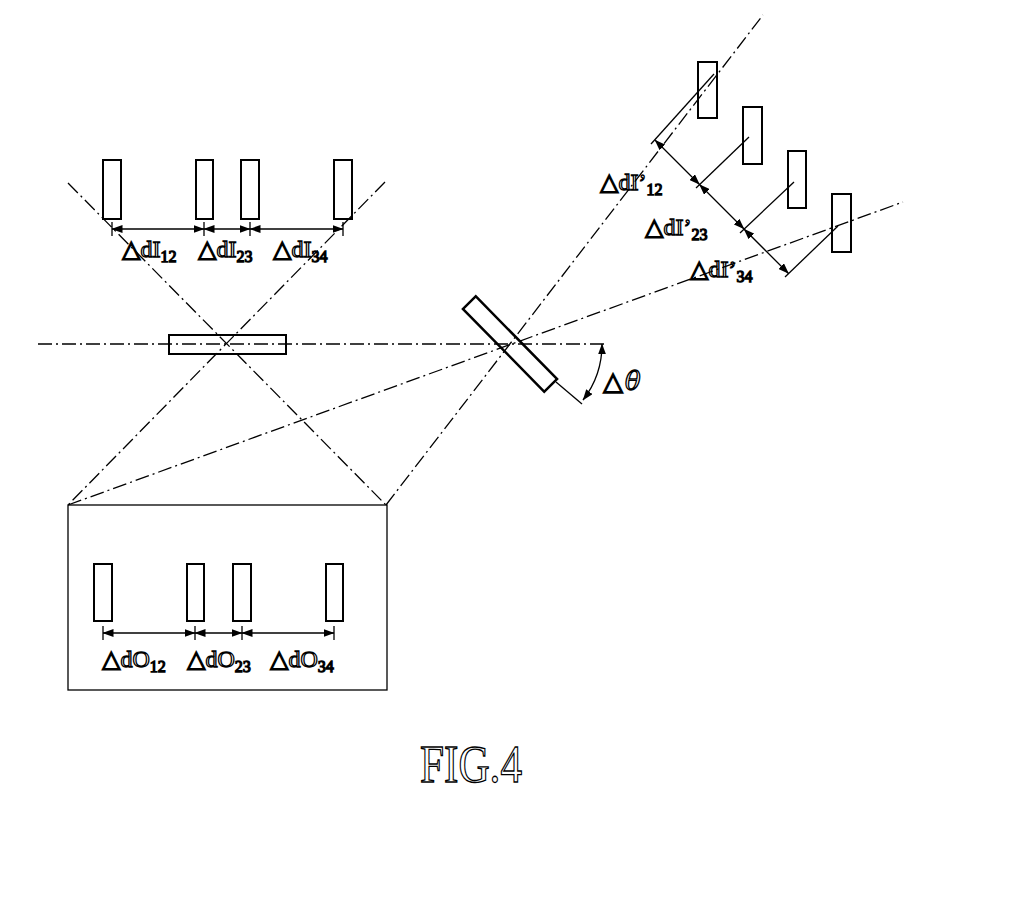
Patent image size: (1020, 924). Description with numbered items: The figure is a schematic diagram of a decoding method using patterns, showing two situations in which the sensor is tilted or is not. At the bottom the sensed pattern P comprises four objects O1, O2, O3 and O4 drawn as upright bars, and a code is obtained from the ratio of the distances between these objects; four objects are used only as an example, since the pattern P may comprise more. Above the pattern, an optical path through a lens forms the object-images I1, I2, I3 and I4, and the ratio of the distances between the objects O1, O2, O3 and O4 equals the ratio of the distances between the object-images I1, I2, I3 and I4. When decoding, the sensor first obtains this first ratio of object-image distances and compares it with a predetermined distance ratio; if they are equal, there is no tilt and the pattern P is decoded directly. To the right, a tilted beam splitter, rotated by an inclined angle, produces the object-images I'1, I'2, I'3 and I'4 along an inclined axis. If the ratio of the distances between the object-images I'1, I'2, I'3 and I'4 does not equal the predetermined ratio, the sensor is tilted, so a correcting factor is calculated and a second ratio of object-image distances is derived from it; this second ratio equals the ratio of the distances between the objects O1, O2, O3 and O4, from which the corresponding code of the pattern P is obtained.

The sensed pattern P is at (238, 597).
The object O1 is at (103, 575).
The object O2 is at (196, 575).
The object O3 is at (242, 575).
The object O4 is at (334, 575).
The object-image I1 is at (112, 173).
The object-image I2 is at (205, 173).
The object-image I3 is at (250, 173).
The object-image I4 is at (343, 173).
The object-image I'1 is at (688, 84).
The object-image I'2 is at (733, 130).
The object-image I'3 is at (778, 175).
The object-image I'4 is at (822, 220).